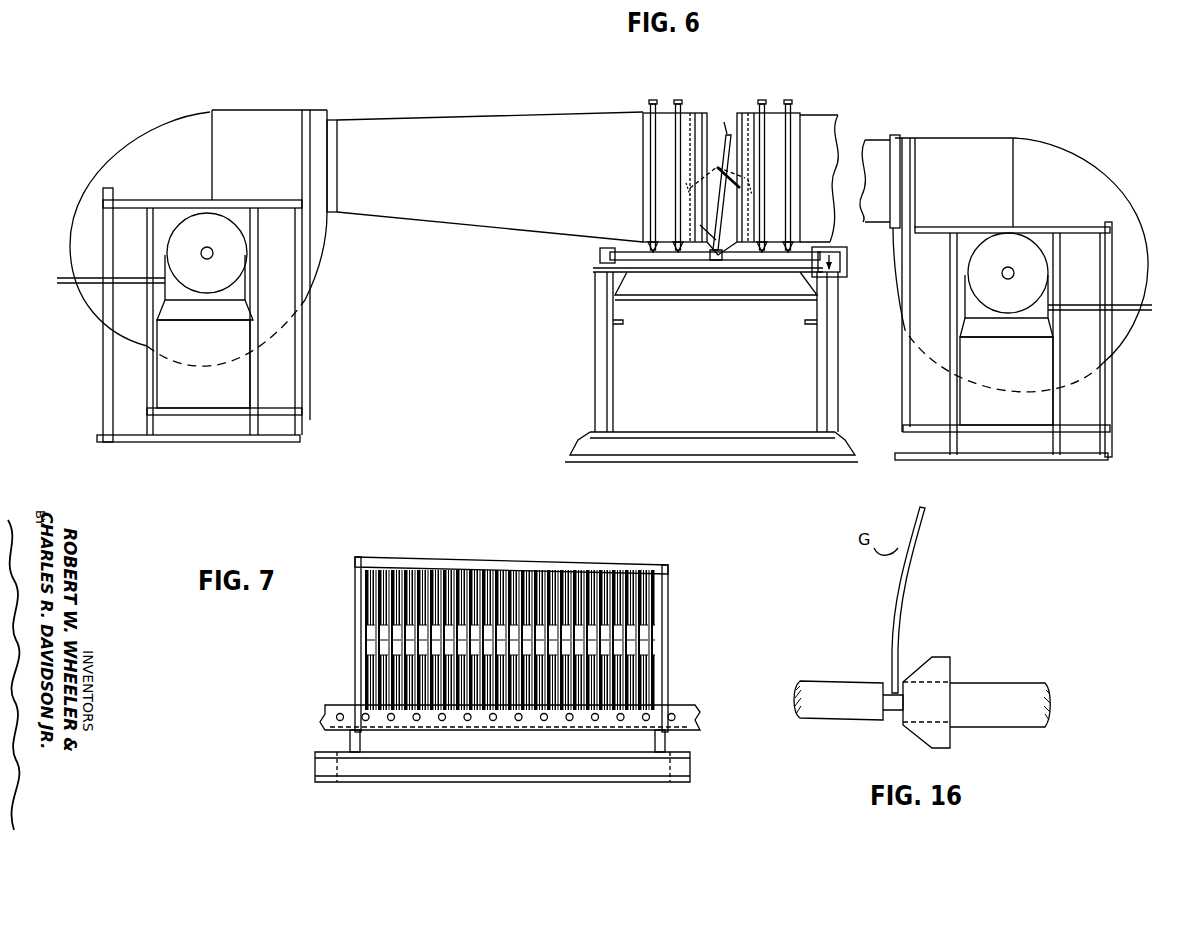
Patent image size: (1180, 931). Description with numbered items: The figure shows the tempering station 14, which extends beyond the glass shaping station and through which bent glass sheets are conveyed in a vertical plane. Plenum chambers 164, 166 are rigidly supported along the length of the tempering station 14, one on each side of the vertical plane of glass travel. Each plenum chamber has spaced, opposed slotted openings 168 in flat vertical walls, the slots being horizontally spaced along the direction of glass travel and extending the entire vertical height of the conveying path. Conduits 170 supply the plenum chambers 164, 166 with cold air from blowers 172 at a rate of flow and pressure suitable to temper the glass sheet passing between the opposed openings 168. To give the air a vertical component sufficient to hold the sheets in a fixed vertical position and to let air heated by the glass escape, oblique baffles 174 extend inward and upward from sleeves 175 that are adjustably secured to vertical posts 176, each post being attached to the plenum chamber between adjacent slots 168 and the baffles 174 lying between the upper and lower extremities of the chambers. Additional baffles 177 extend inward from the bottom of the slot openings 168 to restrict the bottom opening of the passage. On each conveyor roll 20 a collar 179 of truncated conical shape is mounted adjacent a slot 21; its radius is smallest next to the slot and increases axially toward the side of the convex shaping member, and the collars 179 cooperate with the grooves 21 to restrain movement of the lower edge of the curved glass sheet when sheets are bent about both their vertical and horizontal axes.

In FIG. 6, the tempering station 14 is at (718, 159).
In FIG. 7, the tempering station 14 is at (512, 648).
In FIG. 6, the conveyor roll 20 is at (703, 262).
In FIG. 7, the conveyor roll 20 is at (442, 721).
In FIG. 16, the conveyor roll 20 is at (987, 692).
In FIG. 6, the slot 21 is at (722, 262).
In FIG. 16, the slot 21 is at (893, 722).
In FIG. 6, the plenum chamber 164 is at (645, 113).
In FIG. 6, the plenum chamber 166 is at (796, 120).
In FIG. 7, the slotted openings 168 is at (637, 620).
In FIG. 6, the conduits 170 is at (412, 120).
In FIG. 6, the blowers 172 is at (120, 158).
In FIG. 6, the oblique baffles 174 is at (717, 167).
In FIG. 7, the oblique baffles 174 is at (432, 572).
In FIG. 6, the sleeves 175 is at (690, 188).
In FIG. 7, the sleeves 175 is at (553, 655).
In FIG. 6, the vertical posts 176 is at (690, 128).
In FIG. 7, the vertical posts 176 is at (625, 688).
In FIG. 6, the additional baffles 177 is at (716, 240).
In FIG. 16, the collar 179 is at (940, 657).